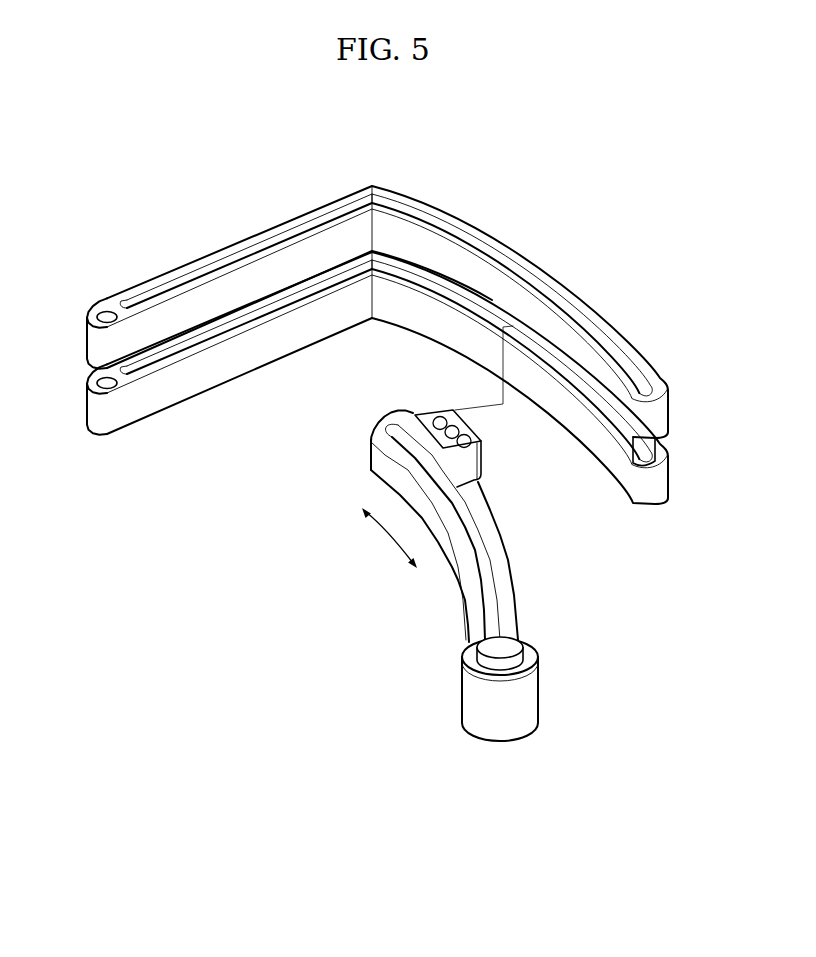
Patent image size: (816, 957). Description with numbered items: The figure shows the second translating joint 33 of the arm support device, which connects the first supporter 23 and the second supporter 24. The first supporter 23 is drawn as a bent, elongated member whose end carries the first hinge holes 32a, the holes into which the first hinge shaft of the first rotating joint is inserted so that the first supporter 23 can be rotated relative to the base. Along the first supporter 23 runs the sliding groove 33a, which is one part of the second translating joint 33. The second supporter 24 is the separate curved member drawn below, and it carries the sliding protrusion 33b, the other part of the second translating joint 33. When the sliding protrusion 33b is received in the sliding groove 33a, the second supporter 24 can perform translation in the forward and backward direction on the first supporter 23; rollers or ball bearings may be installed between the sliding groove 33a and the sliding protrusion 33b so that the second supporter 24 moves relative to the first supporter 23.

The first supporter 23 is at (373, 295).
The second supporter 24 is at (464, 575).
The first hinge holes 32a is at (107, 317).
The second translating joint 33 is at (377, 373).
The sliding groove 33a is at (462, 302).
The sliding protrusion 33b is at (468, 465).